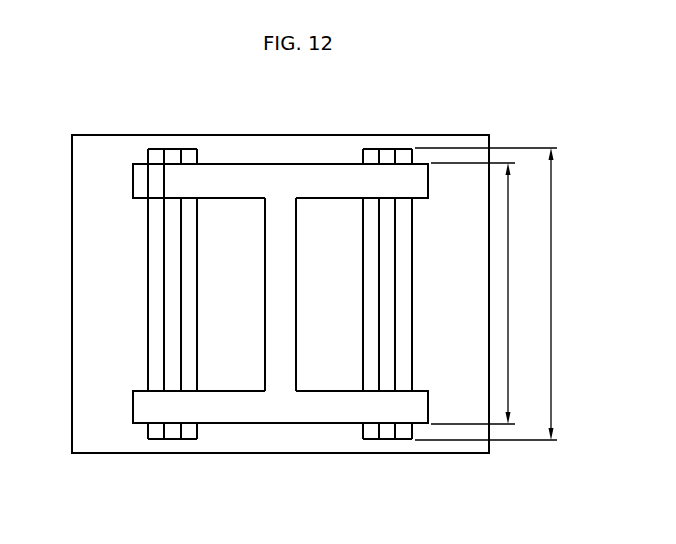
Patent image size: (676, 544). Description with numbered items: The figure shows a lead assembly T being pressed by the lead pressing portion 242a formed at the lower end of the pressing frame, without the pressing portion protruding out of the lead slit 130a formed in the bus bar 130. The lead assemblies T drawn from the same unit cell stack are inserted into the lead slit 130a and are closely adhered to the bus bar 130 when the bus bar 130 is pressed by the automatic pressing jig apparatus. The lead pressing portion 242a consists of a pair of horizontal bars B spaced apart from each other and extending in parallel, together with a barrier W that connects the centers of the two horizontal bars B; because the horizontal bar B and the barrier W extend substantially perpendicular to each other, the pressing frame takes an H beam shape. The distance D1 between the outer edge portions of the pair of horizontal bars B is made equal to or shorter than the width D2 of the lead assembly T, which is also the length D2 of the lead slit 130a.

The bus bar 130 is at (455, 135).
The lead slit 130a is at (148, 313).
The lead pressing portion 242a is at (291, 146).
The horizontal bar B is at (224, 170).
The lead assembly T is at (388, 157).
The barrier W is at (280, 350).
The distance between outer edge portions of the horizontal bars D1 is at (483, 293).
The width of the lead assembly D2 is at (496, 294).